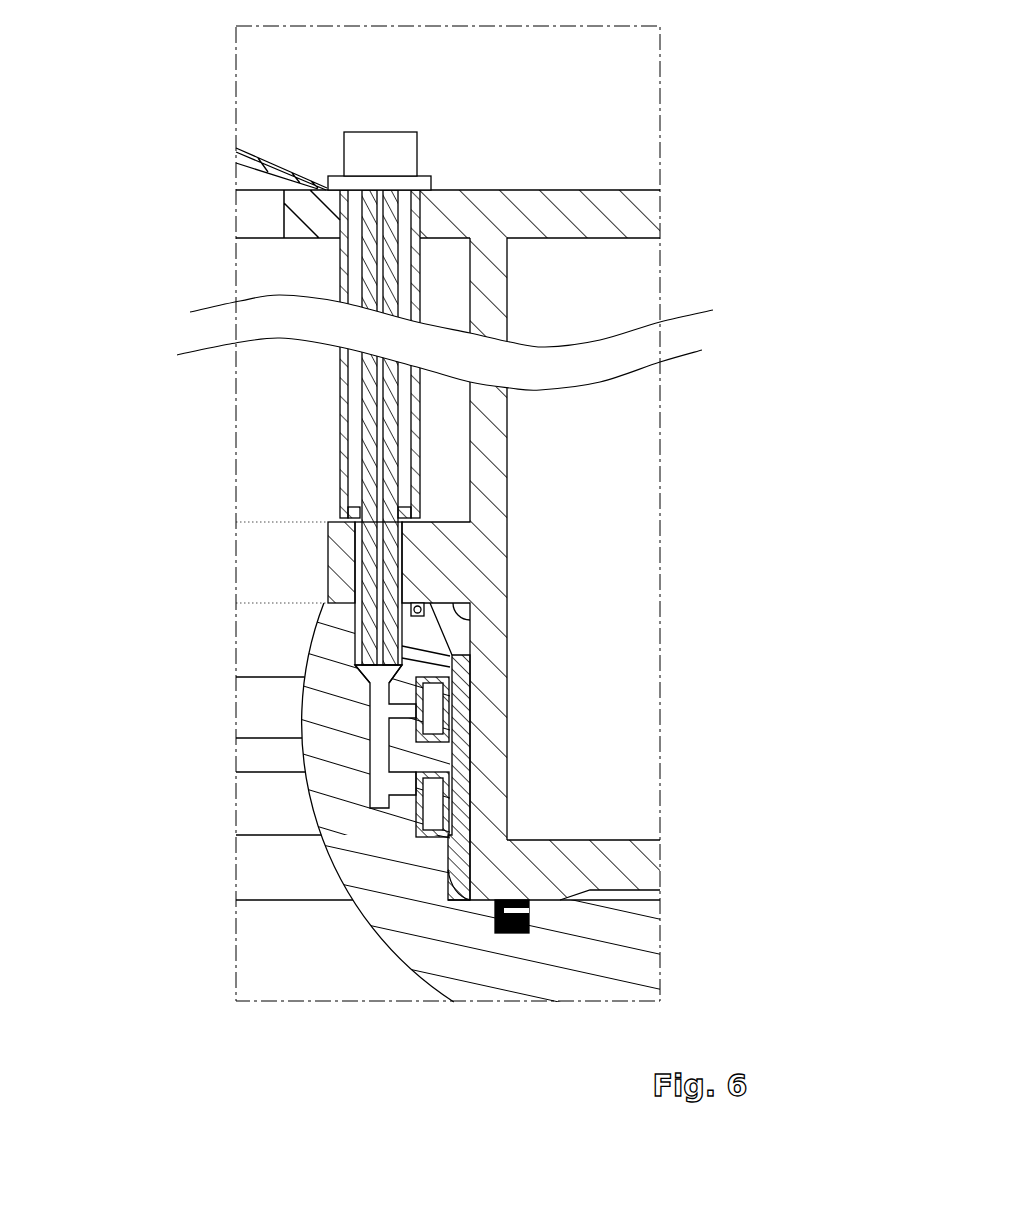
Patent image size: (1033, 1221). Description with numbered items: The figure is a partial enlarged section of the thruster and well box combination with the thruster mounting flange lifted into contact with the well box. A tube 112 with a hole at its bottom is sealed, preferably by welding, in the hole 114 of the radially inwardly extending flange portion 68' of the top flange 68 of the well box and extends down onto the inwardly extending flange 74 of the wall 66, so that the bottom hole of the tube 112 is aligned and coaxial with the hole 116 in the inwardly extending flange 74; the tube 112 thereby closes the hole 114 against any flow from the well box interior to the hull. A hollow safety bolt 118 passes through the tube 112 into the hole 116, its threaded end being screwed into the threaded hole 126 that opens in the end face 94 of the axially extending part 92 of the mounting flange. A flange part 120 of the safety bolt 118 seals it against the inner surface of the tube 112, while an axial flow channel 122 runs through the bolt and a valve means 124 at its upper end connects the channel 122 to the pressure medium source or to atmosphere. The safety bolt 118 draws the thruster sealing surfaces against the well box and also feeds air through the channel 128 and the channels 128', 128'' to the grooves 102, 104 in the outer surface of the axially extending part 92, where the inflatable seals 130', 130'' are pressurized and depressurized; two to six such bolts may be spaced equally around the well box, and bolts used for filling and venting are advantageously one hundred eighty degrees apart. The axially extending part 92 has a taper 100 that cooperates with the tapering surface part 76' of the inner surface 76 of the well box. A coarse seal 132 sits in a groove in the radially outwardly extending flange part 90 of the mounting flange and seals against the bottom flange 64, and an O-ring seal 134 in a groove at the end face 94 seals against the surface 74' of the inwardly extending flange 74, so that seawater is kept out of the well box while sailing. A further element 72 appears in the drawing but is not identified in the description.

The bottom flange 64 is at (605, 862).
The wall 66 is at (505, 323).
The top flange 68 is at (492, 132).
The radially inwardly extending flange portion 68' is at (512, 119).
The lever arm 72 is at (257, 170).
The inwardly extending flange 74 is at (214, 527).
The surface of the inwardly extending flange 74' is at (603, 595).
The inner surface 76 is at (578, 751).
The tapering surface part 76' is at (613, 831).
The radially outwardly extending flange part 90 is at (605, 972).
The axially extending part 92 is at (327, 750).
The end face 94 is at (329, 590).
The taper 100 is at (415, 640).
The groove 102 is at (277, 707).
The groove 104 is at (280, 810).
The tube 112 is at (342, 419).
The hole 114 is at (322, 246).
The hole 116 is at (330, 522).
The safety bolt 118 is at (392, 440).
The flange part 120 is at (417, 507).
The axial flow channel 122 is at (378, 588).
The valve means 124 is at (385, 158).
The threaded hole 126 is at (332, 620).
The channel 128 is at (247, 645).
The channel 128' is at (265, 709).
The channel 128'' is at (301, 821).
The inflatable seal 130' is at (597, 689).
The inflatable seal 130'' is at (607, 776).
The coarse seal 132 is at (530, 912).
The O-ring seal 134 is at (422, 598).